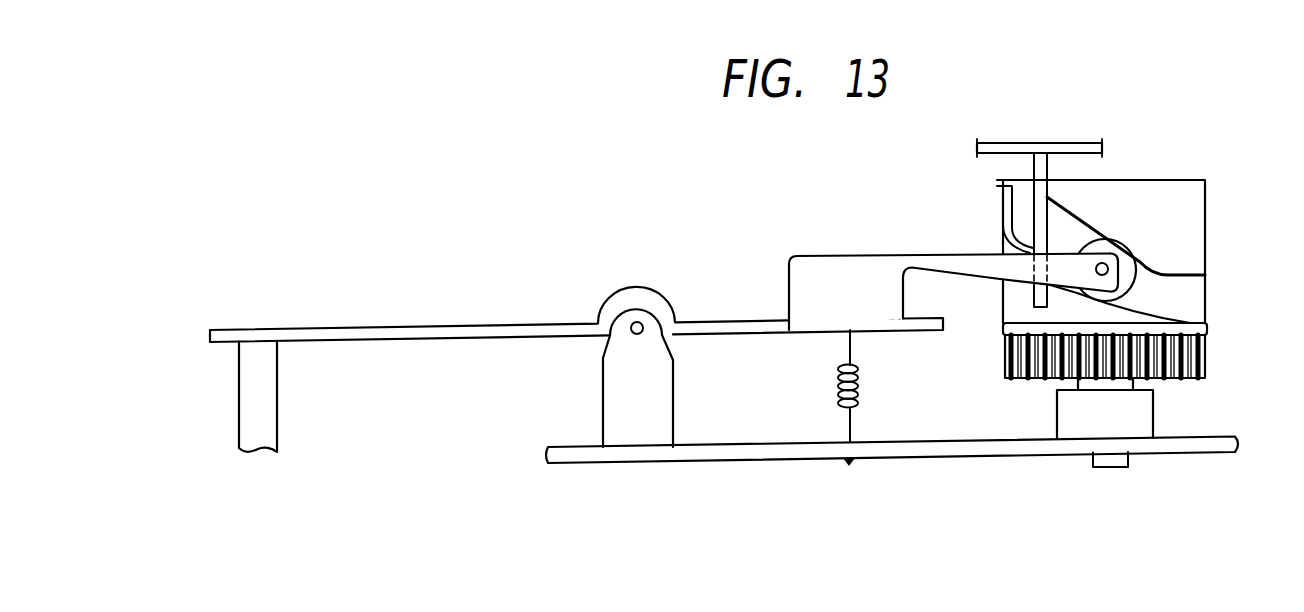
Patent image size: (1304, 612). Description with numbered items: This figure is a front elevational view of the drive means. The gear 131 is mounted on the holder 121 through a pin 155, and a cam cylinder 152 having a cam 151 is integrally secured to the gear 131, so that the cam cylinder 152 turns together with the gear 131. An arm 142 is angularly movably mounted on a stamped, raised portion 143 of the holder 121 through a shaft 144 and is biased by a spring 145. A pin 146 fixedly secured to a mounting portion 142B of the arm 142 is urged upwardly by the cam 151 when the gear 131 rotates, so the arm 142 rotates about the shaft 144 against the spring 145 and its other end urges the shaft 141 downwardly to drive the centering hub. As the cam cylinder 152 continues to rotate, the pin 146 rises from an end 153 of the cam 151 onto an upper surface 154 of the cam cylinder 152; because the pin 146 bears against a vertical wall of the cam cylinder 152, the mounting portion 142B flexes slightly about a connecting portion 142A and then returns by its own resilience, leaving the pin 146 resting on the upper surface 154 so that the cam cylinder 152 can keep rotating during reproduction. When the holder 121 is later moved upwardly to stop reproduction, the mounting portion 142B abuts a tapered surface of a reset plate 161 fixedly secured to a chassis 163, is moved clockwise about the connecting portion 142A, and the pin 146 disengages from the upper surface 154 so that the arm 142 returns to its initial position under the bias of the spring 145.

The holder 121 is at (772, 463).
The gear 131 is at (1208, 358).
The shaft 141 is at (255, 408).
The arm 142 is at (500, 325).
The connecting portion 142A is at (816, 268).
The mounting portion 142B is at (960, 264).
The stamped, raised portion 143 is at (618, 388).
The shaft 144 is at (645, 320).
The spring 145 is at (836, 383).
The pin 146 is at (1140, 262).
The cam 151 is at (1180, 300).
The cam cylinder 152 is at (1190, 257).
The end of the cam 153 is at (1007, 212).
The upper surface of the cam cylinder 154 is at (1190, 178).
The pin 155 is at (1077, 425).
The reset plate 161 is at (1028, 170).
The chassis 163 is at (1038, 143).